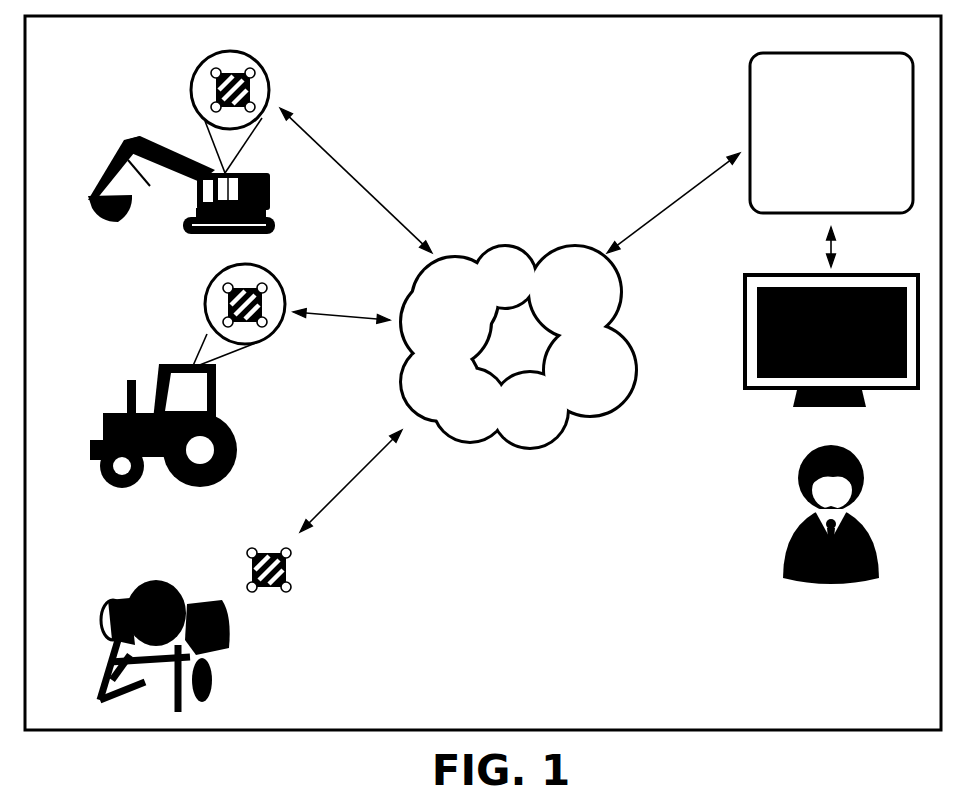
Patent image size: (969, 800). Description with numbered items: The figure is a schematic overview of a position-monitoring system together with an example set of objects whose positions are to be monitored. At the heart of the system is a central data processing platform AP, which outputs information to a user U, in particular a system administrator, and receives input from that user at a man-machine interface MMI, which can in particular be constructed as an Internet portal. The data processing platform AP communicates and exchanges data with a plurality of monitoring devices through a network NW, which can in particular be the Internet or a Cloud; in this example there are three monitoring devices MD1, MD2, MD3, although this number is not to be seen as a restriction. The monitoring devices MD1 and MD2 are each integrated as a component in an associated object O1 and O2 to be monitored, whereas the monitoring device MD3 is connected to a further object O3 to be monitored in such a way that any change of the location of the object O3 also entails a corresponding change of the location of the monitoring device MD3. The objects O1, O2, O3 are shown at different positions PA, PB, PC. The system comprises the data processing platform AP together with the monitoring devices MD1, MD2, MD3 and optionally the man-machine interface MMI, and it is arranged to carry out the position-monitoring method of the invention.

The network NW is at (518, 347).
The data processing platform AP is at (831, 133).
The man-machine interface MMI is at (745, 343).
The user U is at (785, 544).
The position of object PA is at (157, 178).
The position of object PB is at (137, 426).
The position of object PC is at (134, 637).
The object to be monitored O1 is at (120, 150).
The object to be monitored O2 is at (105, 417).
The object to be monitored O3 is at (127, 592).
The monitoring device MD1 is at (258, 83).
The monitoring device MD2 is at (268, 290).
The monitoring device MD3 is at (287, 572).